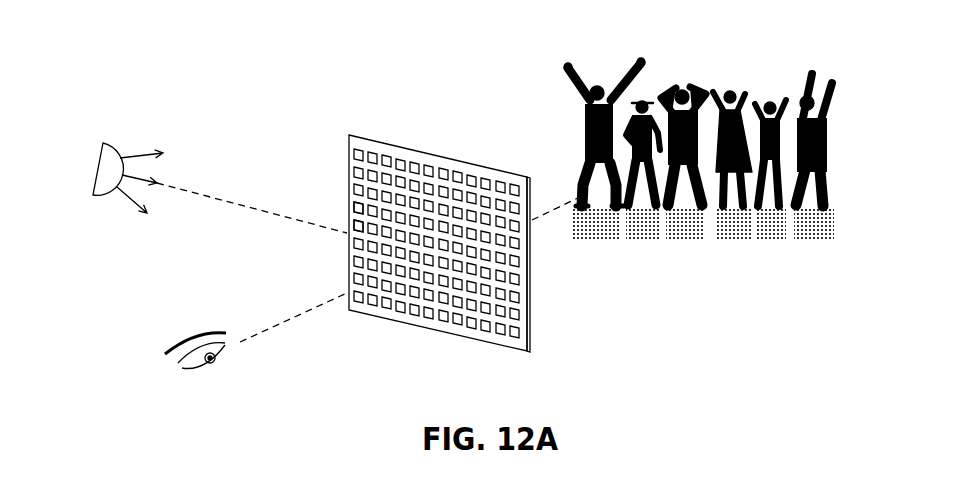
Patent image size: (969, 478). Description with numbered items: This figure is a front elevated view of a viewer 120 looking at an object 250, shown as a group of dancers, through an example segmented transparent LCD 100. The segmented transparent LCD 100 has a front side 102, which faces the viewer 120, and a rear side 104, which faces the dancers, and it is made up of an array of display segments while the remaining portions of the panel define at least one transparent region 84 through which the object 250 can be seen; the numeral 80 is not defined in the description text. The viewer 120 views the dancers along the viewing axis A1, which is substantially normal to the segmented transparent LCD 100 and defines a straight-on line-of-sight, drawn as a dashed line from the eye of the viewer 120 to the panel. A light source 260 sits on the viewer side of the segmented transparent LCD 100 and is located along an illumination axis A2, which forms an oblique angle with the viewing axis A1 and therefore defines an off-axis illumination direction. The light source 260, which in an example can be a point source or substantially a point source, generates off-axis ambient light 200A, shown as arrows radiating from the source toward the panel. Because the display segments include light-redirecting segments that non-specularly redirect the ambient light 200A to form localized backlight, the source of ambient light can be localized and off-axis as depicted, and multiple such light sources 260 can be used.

The segmented transparent LCD 100 is at (350, 112).
The front side 102 is at (523, 346).
The rear side 104 is at (530, 313).
The array of apertures / pixels 80 is at (355, 177).
The transparent region 84 is at (353, 220).
The light source 260 is at (100, 143).
The off-axis ambient light 200A is at (133, 147).
The illumination axis A2 is at (237, 205).
The viewing axis A1 is at (293, 318).
The viewer 120 is at (185, 330).
The object 250 is at (740, 63).